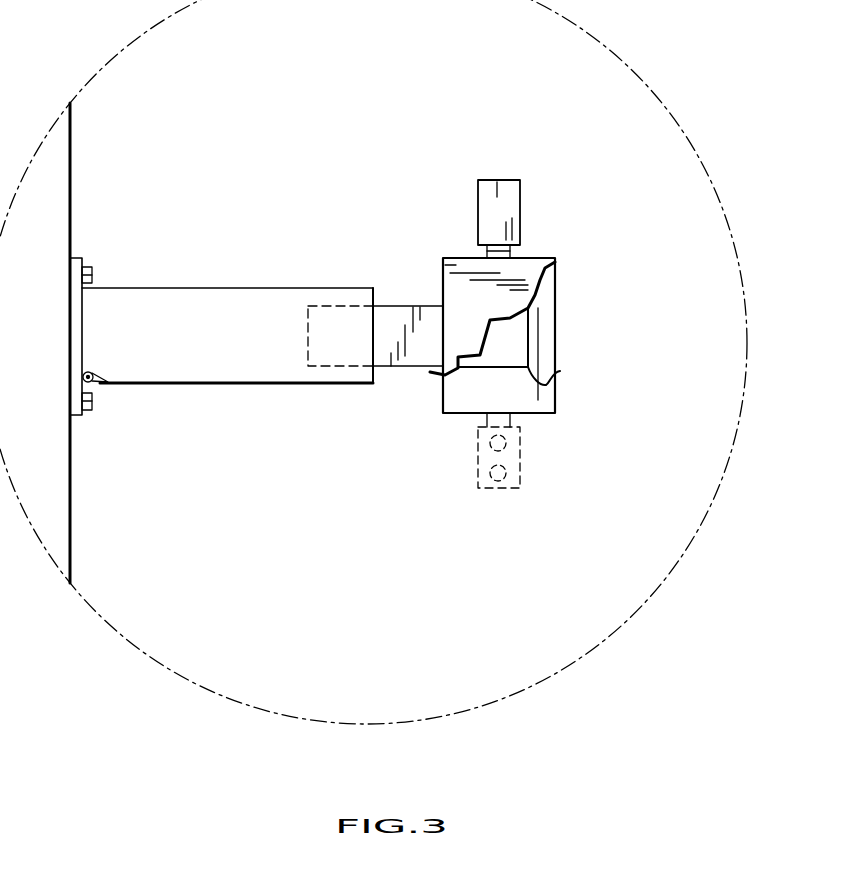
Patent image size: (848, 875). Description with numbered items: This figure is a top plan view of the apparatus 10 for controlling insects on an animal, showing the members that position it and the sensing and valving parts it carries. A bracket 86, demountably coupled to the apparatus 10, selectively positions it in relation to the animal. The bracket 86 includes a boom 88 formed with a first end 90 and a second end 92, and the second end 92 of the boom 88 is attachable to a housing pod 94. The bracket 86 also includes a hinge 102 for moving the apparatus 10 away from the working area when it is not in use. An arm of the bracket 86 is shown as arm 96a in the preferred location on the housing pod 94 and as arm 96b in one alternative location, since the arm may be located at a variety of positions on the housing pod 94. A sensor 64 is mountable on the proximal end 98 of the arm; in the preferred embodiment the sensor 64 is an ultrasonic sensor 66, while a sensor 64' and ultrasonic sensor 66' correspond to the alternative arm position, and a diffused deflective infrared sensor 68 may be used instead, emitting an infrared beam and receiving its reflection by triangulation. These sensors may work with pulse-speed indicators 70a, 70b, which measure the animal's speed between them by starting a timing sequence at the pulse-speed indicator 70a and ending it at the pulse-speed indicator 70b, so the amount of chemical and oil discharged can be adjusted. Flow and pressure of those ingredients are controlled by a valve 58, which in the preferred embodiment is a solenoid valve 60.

The apparatus 10 is at (648, 82).
The valve 58 is at (550, 333).
The solenoid valve 60 is at (552, 374).
The sensor 64 is at (556, 207).
The sensor 64' is at (542, 459).
The ultrasonic sensor 66 is at (471, 147).
The ultrasonic sensor 66' is at (452, 466).
The diffused deflective infrared sensor 68 is at (521, 222).
The pulse-speed indicator 70a is at (503, 478).
The pulse-speed indicator 70b is at (497, 197).
The bracket 86 is at (203, 372).
The boom 88 is at (390, 370).
The first end 90 is at (308, 330).
The second end 92 is at (447, 370).
The housing pod 94 is at (556, 277).
The arm 96a is at (520, 250).
The arm 96b is at (524, 420).
The proximal end 98 is at (450, 252).
The hinge 102 is at (112, 387).